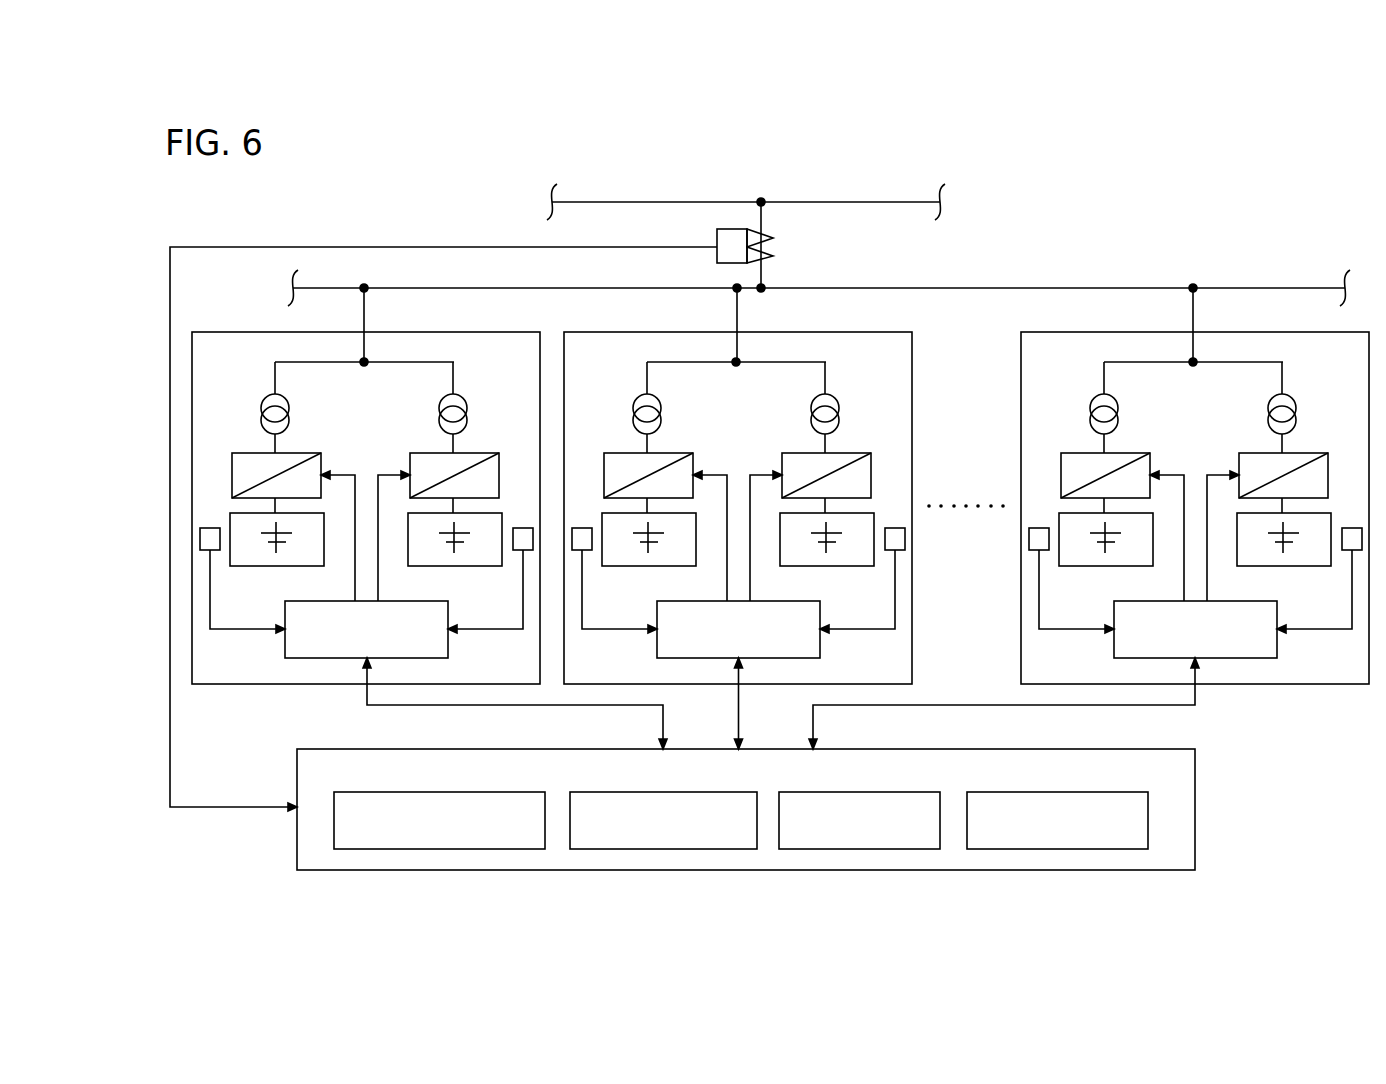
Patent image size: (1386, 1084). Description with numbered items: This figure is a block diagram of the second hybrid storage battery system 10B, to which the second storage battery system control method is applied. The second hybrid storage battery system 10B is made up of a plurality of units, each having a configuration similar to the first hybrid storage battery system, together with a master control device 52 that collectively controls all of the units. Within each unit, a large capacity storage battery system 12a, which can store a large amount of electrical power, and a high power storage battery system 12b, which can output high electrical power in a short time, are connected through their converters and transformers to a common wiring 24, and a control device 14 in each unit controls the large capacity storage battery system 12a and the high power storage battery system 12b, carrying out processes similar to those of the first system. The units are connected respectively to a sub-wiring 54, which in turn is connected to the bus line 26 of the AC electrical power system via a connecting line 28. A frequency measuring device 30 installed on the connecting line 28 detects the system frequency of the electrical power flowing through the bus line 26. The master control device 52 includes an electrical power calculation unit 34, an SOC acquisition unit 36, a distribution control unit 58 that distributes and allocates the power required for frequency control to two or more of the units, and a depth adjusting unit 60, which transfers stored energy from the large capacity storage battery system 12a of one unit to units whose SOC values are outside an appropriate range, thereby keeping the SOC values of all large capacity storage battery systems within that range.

The second hybrid storage battery system 10B is at (383, 206).
The bus line 26 is at (823, 202).
The connecting line 28 is at (763, 218).
The frequency measuring device 30 is at (720, 237).
The sub-wiring 54 is at (957, 288).
The wiring 24 is at (402, 363).
The large capacity storage battery system 12a is at (253, 445).
The high power storage battery system 12b is at (477, 445).
The control device 14 is at (448, 647).
The master control device 52 is at (778, 809).
The electrical power calculation unit 34 is at (443, 792).
The SOC acquisition unit 36 is at (695, 792).
The distribution control unit 58 is at (843, 792).
The depth adjusting unit 60 is at (1033, 792).